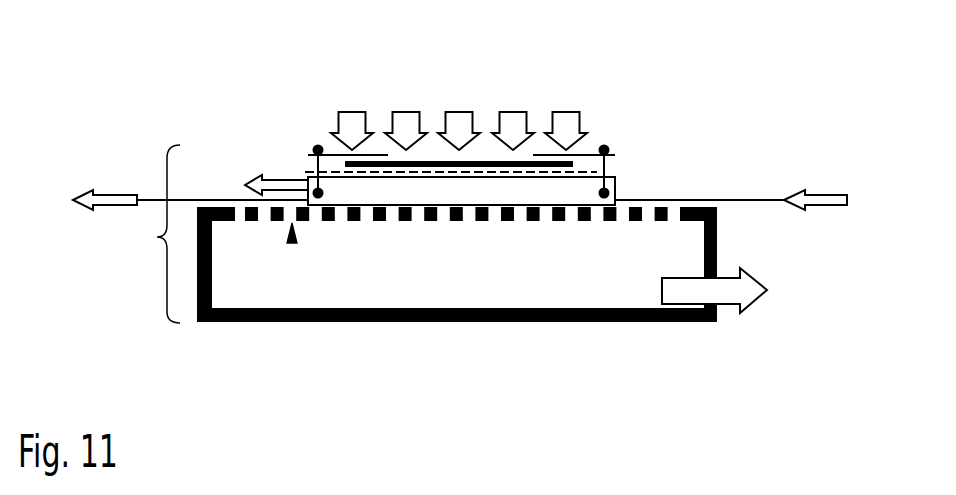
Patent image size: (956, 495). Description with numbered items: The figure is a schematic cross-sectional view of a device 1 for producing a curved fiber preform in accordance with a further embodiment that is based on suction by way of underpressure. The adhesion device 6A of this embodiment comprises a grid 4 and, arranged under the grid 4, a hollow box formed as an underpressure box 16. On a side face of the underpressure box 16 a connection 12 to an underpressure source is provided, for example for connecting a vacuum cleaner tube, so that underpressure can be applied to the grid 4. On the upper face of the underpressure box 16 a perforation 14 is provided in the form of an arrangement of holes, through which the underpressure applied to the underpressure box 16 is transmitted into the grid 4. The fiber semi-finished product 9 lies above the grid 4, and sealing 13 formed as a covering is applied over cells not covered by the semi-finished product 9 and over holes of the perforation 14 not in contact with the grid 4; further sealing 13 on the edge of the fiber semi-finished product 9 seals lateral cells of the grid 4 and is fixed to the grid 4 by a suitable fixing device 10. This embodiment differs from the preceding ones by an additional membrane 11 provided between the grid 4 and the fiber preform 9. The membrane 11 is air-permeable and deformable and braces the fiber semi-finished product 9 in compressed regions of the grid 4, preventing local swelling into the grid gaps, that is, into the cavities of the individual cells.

The device 1 is at (230, 88).
The grid 4 is at (397, 190).
The adhesion device 6A is at (152, 234).
The fiber semi-finished product 9 is at (437, 161).
The fixing device 10 is at (314, 148).
The membrane 11 is at (616, 174).
The connection 12 is at (745, 298).
The sealing 13 is at (330, 156).
The perforation 14 is at (292, 243).
The underpressure box 16 is at (532, 323).